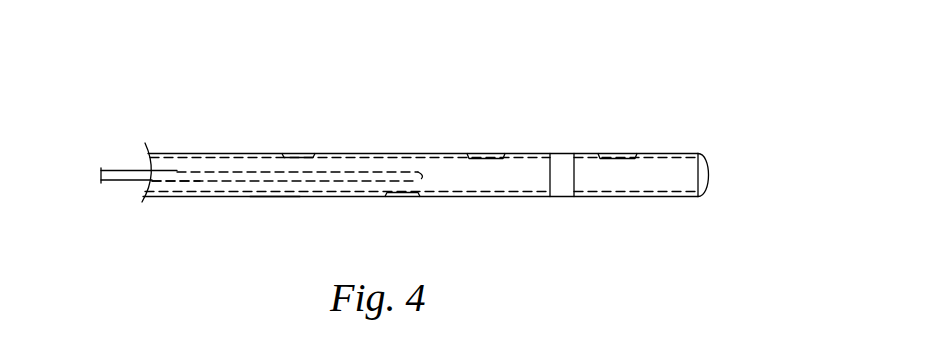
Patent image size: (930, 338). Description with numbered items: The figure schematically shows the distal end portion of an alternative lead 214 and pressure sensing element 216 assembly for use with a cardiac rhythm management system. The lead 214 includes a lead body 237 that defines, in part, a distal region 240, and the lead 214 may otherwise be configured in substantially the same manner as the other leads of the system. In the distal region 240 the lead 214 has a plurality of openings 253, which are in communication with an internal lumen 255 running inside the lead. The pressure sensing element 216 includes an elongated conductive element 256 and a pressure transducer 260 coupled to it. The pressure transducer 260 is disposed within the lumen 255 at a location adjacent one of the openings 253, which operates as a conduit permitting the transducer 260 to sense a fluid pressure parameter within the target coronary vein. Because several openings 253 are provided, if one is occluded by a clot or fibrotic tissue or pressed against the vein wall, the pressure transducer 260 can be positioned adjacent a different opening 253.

The lead 214 is at (180, 150).
The pressure sensing element 216 is at (123, 184).
The lead body 237 is at (234, 206).
The distal region 240 is at (275, 210).
The openings 253 is at (300, 153).
The internal lumen 255 is at (254, 157).
The elongated conductive element 256 is at (170, 197).
The pressure transducer 260 is at (404, 168).